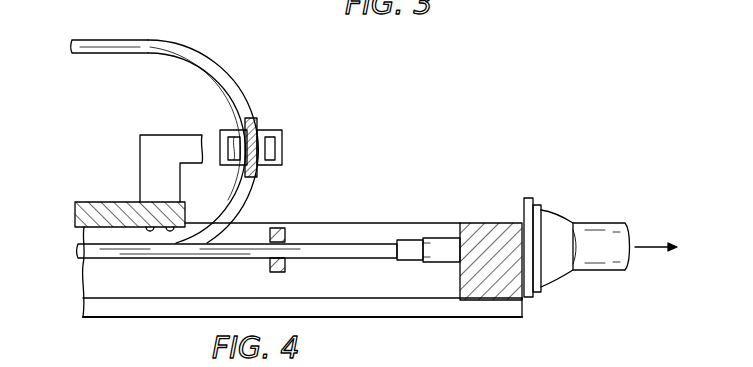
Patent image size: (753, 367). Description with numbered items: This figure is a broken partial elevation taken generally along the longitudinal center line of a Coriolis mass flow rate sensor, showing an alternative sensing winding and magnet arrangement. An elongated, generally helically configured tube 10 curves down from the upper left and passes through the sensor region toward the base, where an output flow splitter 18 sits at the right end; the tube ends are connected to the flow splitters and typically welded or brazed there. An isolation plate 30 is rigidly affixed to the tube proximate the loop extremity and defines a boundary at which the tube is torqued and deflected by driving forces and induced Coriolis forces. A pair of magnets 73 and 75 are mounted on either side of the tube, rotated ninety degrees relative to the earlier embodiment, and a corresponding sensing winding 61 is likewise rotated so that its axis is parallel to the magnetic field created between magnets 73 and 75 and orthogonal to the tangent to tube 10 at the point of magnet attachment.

The tube 10 is at (174, 125).
The sensing winding 61 is at (250, 100).
The magnet 73 is at (224, 152).
The magnet 75 is at (278, 150).
The isolation plate 30 is at (294, 238).
The output flow splitter 18 is at (482, 223).